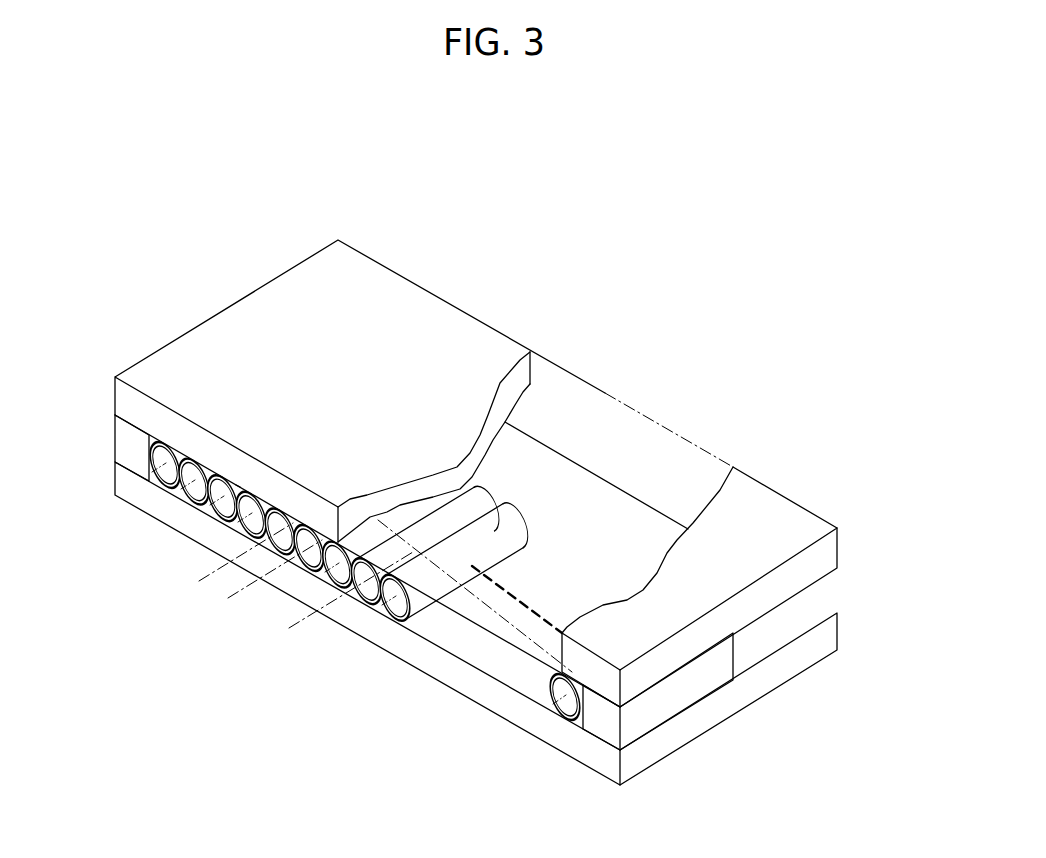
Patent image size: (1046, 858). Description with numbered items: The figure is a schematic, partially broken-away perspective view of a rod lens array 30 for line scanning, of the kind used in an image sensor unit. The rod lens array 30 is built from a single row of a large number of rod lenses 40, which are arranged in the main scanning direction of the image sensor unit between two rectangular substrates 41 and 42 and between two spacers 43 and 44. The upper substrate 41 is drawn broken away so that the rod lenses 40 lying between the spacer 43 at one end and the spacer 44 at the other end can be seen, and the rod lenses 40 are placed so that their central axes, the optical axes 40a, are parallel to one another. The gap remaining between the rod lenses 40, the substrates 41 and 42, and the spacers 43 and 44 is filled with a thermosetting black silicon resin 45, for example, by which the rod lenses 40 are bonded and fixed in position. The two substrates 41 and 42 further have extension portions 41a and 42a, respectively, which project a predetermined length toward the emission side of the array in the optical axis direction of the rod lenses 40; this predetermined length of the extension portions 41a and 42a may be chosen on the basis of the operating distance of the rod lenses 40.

The rod lens array 30 is at (485, 352).
The rod lenses 40 is at (325, 590).
The optical axes 40a is at (243, 593).
The substrate 41 is at (265, 307).
The extension portion 41a is at (793, 572).
The substrate 42 is at (485, 698).
The extension portion 42a is at (790, 660).
The spacer 43 is at (131, 462).
The spacer 44 is at (604, 727).
The thermosetting black silicon resin 45 is at (233, 527).